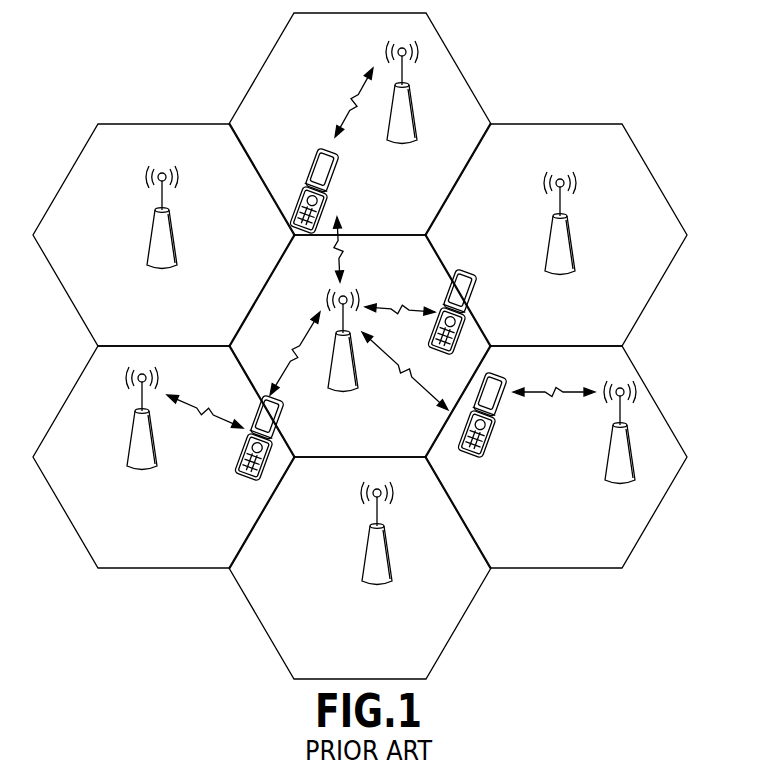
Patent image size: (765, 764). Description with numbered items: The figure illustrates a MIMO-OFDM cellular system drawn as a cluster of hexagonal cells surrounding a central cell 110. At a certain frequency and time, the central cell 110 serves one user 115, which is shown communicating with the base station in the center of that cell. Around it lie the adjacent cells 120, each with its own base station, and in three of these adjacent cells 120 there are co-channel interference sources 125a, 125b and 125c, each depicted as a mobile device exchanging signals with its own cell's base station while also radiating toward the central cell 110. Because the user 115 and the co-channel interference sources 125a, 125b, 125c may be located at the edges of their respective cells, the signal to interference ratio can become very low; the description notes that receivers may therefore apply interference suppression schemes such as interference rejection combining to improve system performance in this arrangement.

The central cell 110 is at (385, 442).
The adjacent cells 120 is at (402, 214).
The user 115 is at (466, 268).
The co-channel interference source 125a is at (482, 463).
The co-channel interference source 125b is at (248, 482).
The co-channel interference source 125c is at (297, 190).